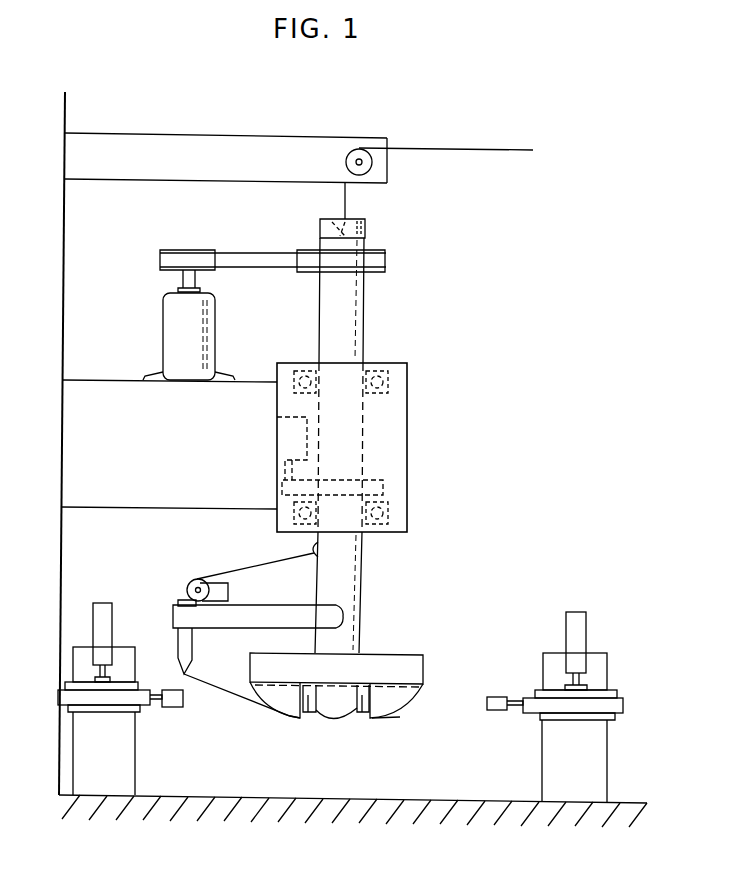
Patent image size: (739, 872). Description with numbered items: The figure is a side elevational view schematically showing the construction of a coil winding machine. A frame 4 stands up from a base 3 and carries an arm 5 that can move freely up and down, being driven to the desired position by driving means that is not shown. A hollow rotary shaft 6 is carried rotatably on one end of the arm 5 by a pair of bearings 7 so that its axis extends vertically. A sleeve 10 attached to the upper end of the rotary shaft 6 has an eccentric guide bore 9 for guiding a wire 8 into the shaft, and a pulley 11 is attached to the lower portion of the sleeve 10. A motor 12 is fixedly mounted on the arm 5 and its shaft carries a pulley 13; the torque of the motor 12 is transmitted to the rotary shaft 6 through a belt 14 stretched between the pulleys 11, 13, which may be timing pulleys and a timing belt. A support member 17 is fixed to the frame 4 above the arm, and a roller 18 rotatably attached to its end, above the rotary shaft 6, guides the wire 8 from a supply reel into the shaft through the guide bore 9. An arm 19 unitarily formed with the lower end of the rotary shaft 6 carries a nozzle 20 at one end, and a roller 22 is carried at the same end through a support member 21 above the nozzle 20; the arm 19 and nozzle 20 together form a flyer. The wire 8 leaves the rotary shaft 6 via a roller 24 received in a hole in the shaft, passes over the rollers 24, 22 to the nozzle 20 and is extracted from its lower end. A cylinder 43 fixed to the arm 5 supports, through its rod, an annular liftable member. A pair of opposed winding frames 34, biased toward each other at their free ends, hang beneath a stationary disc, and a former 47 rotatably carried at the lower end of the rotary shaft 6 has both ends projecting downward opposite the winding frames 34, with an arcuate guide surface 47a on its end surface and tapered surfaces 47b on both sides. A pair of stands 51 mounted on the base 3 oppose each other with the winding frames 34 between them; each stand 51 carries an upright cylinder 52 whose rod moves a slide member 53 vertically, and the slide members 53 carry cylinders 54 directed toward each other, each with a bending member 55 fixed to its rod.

The base 3 is at (150, 802).
The frame 4 is at (65, 257).
The arm 5 is at (118, 508).
The hollow rotary shaft 6 is at (360, 605).
The bearings 7 is at (388, 514).
The wire 8 is at (470, 149).
The eccentric guide bore 9 is at (337, 229).
The sleeve 10 is at (366, 228).
The pulley 11 is at (378, 274).
The motor 12 is at (163, 345).
The pulley 13 is at (178, 249).
The belt 14 is at (258, 267).
The support member 17 is at (235, 181).
The roller 18 is at (372, 165).
The arm 19 is at (293, 606).
The nozzle 20 is at (192, 645).
The support member 21 is at (228, 591).
The roller 22 is at (195, 580).
The roller 24 is at (313, 549).
The winding frames 34 is at (334, 722).
The cylinder 43 is at (277, 438).
The former 47 is at (405, 654).
The arcuate guide surface 47a is at (420, 697).
The tapered surfaces 47b is at (398, 710).
The stands 51 is at (135, 775).
The cylinder 52 is at (93, 618).
The slide member 53 is at (66, 684).
The cylinders 54 is at (58, 699).
The bending member 55 is at (176, 708).